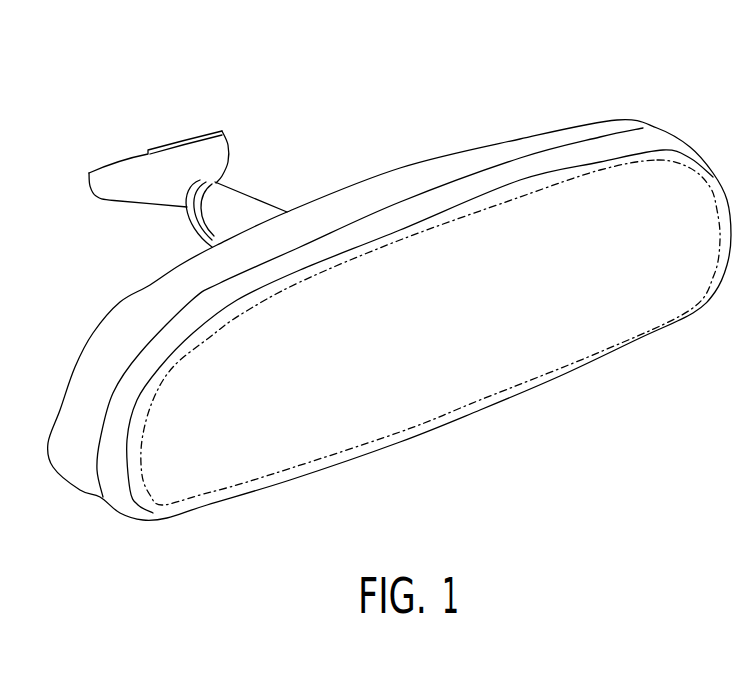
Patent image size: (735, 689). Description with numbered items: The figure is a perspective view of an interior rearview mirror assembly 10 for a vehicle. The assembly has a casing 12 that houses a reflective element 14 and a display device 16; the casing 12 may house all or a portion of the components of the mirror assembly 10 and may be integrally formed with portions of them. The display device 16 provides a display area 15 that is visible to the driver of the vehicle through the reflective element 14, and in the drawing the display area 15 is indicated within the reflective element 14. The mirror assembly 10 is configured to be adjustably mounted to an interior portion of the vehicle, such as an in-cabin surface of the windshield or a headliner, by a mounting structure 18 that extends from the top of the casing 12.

The interior rearview mirror assembly 10 is at (552, 51).
The casing 12 is at (413, 175).
The reflective element 14 is at (598, 323).
The display area 15 is at (488, 372).
The display device 16 is at (330, 399).
The mounting structure 18 is at (256, 129).